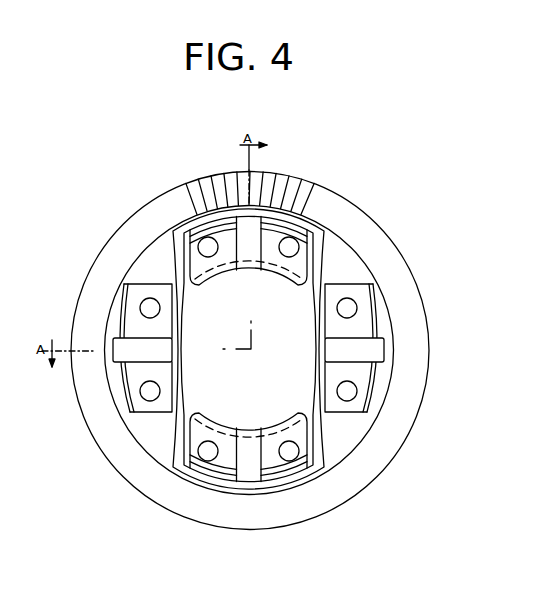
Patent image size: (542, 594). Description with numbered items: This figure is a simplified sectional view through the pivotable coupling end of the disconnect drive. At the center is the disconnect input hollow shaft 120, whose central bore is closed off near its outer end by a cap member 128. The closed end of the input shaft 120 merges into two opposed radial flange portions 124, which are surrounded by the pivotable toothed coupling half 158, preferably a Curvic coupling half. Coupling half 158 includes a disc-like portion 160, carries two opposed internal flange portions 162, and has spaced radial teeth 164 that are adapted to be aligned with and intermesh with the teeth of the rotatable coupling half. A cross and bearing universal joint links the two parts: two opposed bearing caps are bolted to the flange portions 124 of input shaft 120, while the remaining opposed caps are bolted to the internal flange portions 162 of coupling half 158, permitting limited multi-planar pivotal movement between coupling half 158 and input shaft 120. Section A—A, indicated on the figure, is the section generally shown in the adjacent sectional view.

The pivotable toothed coupling half 158 is at (159, 195).
The disc-like portion 160 is at (122, 227).
The radial teeth 164 is at (285, 184).
The radial flange portions 124 is at (275, 238).
The internal flange portions 162 is at (142, 330).
The disconnect input hollow shaft 120 is at (299, 387).
The cap member 128 is at (264, 388).